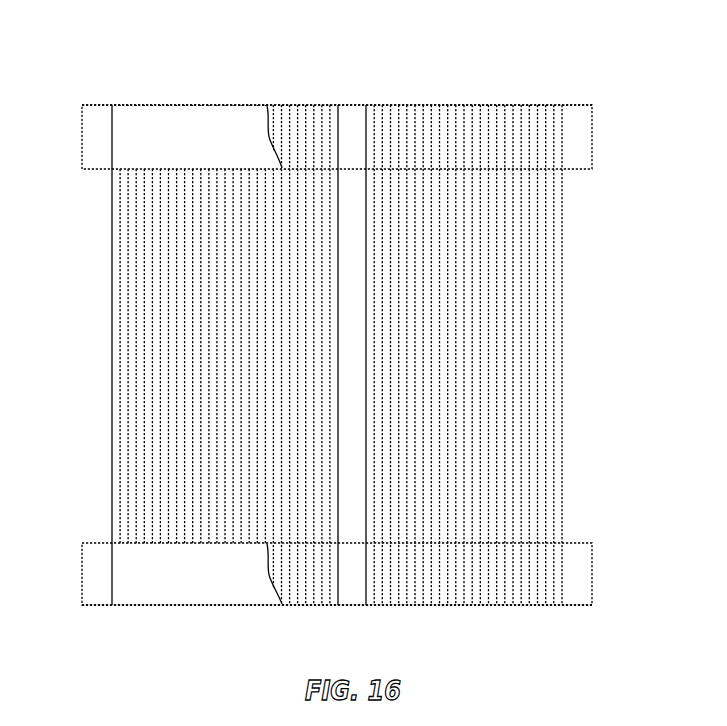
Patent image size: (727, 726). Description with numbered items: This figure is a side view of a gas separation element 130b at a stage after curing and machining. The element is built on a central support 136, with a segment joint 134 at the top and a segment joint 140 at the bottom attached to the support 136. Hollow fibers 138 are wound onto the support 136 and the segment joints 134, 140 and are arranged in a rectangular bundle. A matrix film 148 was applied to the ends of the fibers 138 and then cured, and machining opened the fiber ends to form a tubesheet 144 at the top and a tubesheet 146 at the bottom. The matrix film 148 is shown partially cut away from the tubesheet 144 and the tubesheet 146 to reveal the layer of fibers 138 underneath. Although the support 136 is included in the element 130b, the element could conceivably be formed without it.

The gas separation element 130b is at (430, 57).
The segment joint 134 is at (97, 104).
The support 136 is at (356, 356).
The fibers 138 is at (111, 298).
The segment joint 140 is at (100, 596).
The tubesheet 144 is at (598, 105).
The tubesheet 146 is at (598, 543).
The matrix film 148 is at (218, 148).